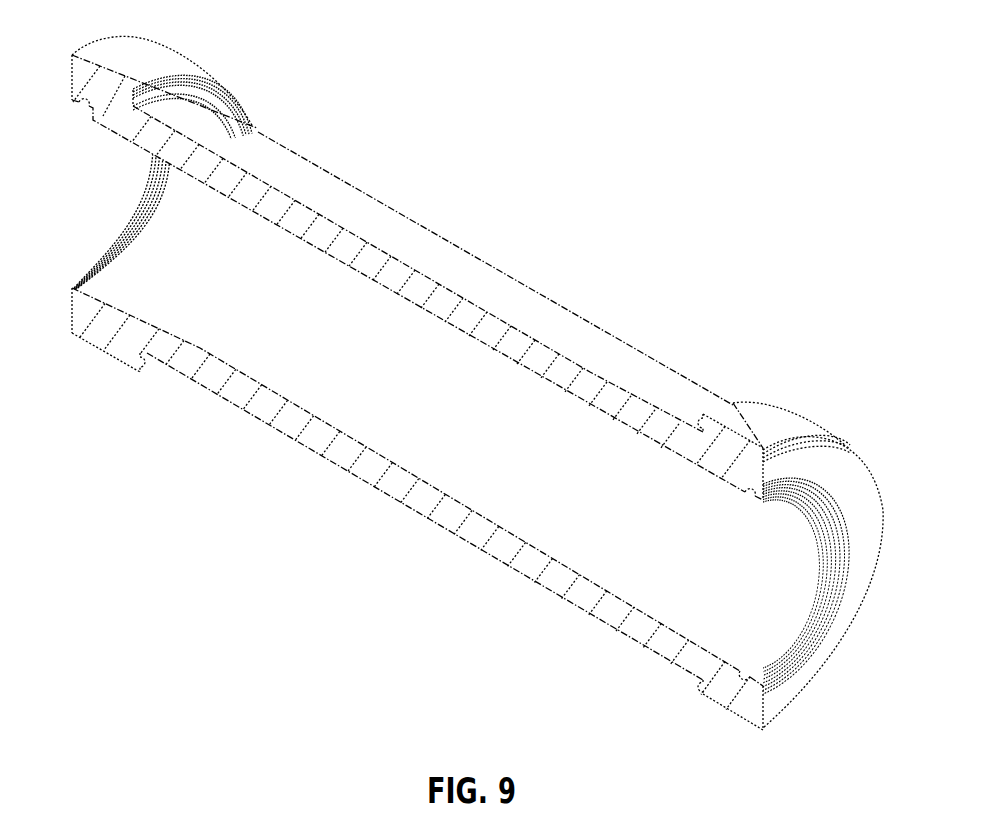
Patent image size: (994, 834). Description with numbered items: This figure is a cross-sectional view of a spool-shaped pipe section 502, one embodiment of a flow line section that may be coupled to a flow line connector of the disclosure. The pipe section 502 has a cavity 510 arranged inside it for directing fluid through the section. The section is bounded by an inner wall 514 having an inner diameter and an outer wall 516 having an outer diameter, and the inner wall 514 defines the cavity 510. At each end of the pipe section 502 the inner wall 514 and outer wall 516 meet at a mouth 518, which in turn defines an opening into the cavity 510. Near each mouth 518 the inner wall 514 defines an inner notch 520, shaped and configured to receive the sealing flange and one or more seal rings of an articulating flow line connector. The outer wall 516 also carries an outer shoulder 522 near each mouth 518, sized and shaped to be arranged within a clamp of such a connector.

The spool-shaped pipe section 502 is at (476, 376).
The cavity 510 is at (776, 589).
The inner wall 514 is at (340, 393).
The outer wall 516 is at (451, 237).
The mouth 518 is at (822, 654).
The inner notch 520 is at (83, 104).
The outer shoulder 522 is at (477, 376).